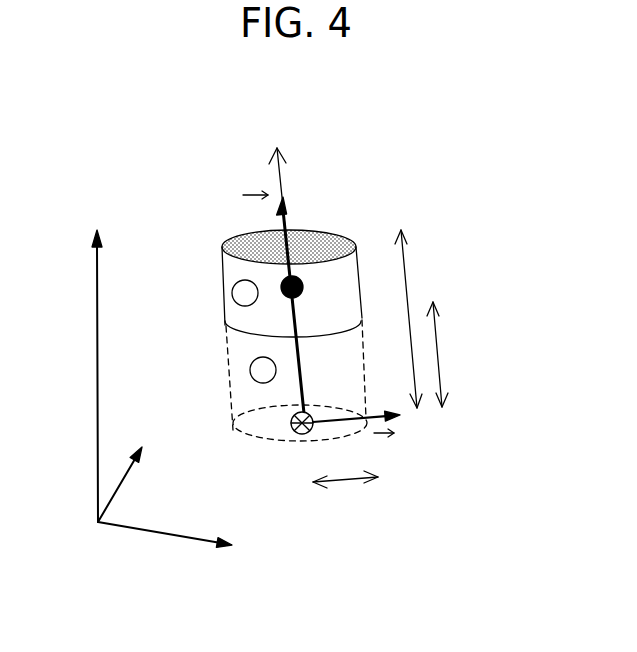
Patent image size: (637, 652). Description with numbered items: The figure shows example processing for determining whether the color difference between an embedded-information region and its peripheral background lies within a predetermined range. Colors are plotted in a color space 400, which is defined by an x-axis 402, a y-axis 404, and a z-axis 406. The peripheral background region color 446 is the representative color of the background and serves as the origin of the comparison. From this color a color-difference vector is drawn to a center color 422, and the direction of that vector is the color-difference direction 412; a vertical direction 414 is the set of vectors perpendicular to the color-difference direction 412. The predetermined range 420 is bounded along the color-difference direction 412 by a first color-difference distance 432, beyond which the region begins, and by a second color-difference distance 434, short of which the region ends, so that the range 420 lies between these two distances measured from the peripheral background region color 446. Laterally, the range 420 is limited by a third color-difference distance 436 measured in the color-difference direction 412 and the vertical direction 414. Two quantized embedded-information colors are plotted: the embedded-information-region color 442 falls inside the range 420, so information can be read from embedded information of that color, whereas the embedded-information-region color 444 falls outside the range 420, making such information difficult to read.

The color space 400 is at (87, 217).
The x-axis 402 is at (152, 533).
The y-axis 404 is at (120, 487).
The z-axis 406 is at (96, 335).
The color-difference direction 412 is at (277, 173).
The vertical direction 414 is at (358, 426).
The range 420 is at (353, 258).
The center color 422 is at (295, 282).
The color-difference distance 432 is at (440, 377).
The color-difference distance 434 is at (405, 277).
The color-difference distance 436 is at (338, 483).
The embedded-information-region color 442 is at (232, 293).
The embedded-information-region color 444 is at (250, 370).
The peripheral background region color 446 is at (290, 426).